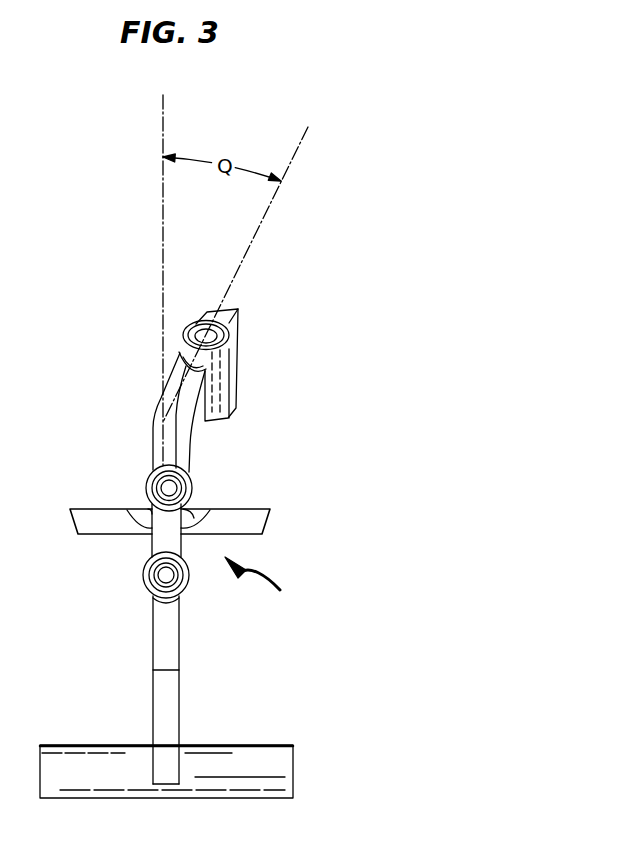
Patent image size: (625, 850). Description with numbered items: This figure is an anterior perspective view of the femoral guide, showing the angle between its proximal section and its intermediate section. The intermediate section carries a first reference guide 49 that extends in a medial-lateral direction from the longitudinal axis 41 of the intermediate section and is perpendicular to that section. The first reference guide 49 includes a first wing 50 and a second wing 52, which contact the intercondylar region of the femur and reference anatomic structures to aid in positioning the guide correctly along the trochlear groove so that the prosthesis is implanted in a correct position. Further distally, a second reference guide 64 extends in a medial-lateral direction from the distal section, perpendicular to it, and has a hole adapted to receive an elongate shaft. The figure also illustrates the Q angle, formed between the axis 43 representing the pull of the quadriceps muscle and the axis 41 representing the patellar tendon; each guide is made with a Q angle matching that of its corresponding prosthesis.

The longitudinal axis of intermediate section 41 is at (163, 237).
The axis 43 is at (255, 240).
The first reference guide 49 is at (269, 581).
The first wing 50 is at (90, 509).
The second wing 52 is at (258, 509).
The second reference guide 64 is at (75, 745).